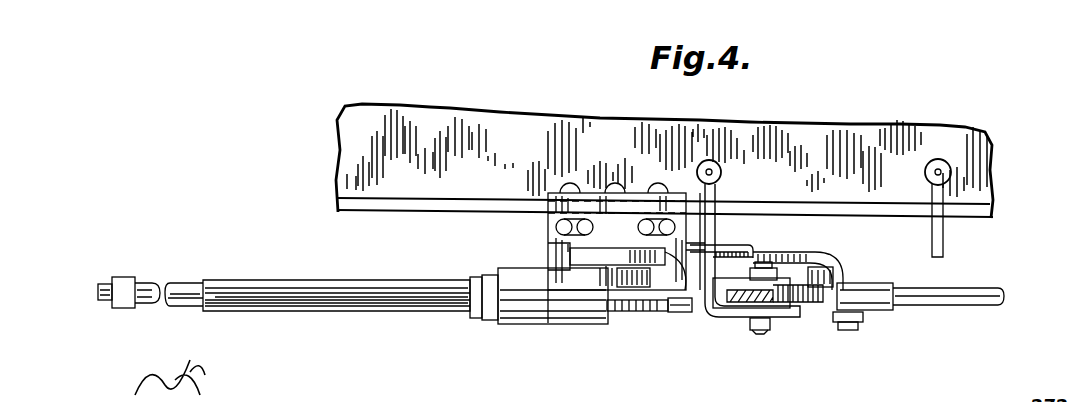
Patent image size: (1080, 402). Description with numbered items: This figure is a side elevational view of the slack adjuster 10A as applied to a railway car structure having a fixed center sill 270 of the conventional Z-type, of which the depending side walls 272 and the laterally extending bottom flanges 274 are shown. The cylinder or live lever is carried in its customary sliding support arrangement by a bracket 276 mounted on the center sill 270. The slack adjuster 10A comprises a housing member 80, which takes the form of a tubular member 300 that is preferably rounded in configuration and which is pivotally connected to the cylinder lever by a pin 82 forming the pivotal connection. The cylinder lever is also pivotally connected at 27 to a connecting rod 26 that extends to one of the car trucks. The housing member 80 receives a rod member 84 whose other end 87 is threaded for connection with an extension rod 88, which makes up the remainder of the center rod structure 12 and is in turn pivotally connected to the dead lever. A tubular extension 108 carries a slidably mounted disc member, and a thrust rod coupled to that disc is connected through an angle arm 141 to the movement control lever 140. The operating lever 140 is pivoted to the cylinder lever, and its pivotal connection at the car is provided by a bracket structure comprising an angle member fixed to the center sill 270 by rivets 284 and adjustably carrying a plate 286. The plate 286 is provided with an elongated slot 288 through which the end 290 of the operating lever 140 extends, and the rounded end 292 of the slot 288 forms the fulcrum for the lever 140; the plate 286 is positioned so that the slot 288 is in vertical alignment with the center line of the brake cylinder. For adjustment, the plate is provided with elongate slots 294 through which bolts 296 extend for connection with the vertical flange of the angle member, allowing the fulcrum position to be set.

The center sill 270 is at (962, 142).
The depending side walls 272 is at (975, 190).
The laterally extending bottom flanges 274 is at (985, 213).
The bracket 276 is at (945, 244).
The bolts 296 is at (583, 218).
The elongate slots 294 is at (572, 221).
The rivets 284 is at (615, 185).
The plate 286 is at (556, 228).
The elongated slot 288 is at (550, 240).
The end of operating lever 290 is at (607, 256).
The rounded end of slot 292 is at (665, 313).
The tubular extension 108 is at (633, 312).
The slack adjuster 10A is at (379, 277).
The center rod structure 12 is at (374, 324).
The housing member 80 is at (439, 321).
The rod member 84 is at (198, 279).
The other end of rod member 87 is at (165, 262).
The extension rod 88 is at (120, 302).
The tubular member 300 is at (290, 297).
The angle arm 141 is at (742, 251).
The movement control lever 140 is at (790, 258).
The pivotal connection 27 is at (898, 253).
The pin 82 is at (760, 332).
The connecting rod 26 is at (932, 305).